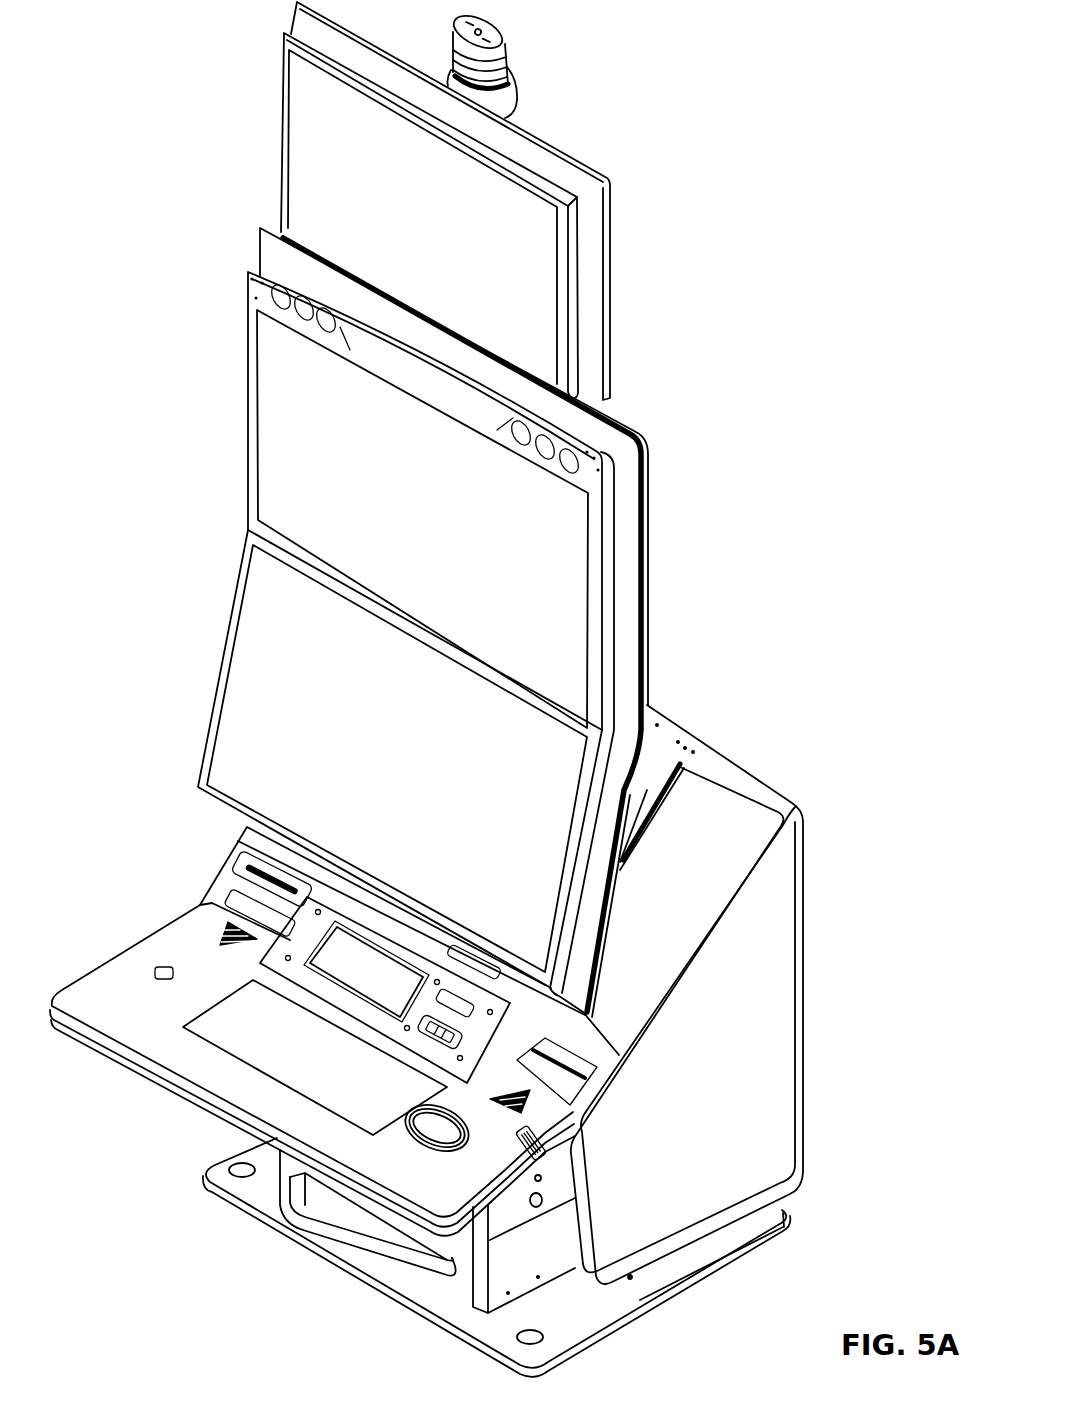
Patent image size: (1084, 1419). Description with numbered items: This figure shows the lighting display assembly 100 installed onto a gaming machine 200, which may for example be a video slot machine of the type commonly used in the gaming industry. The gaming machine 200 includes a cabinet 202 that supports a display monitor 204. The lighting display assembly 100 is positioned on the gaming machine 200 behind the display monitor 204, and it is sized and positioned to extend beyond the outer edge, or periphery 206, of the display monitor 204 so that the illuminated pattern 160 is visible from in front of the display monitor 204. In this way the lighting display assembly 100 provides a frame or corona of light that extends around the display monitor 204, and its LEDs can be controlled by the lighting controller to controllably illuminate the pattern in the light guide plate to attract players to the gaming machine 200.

The lighting display assembly 100 is at (645, 441).
The illuminated pattern 160 is at (628, 677).
The gaming machine 200 is at (631, 799).
The cabinet 202 is at (802, 972).
The display monitor 204 is at (547, 643).
The outer edge (periphery) 206 is at (605, 547).